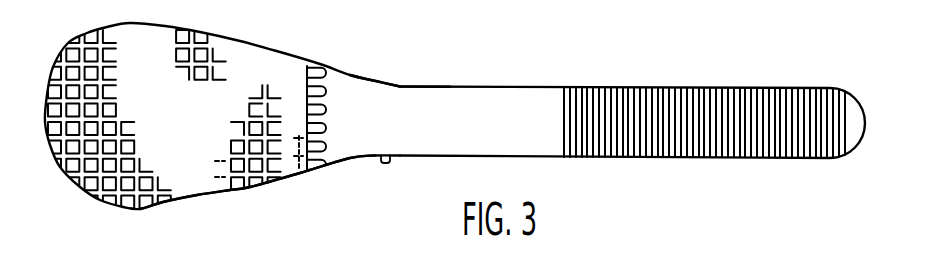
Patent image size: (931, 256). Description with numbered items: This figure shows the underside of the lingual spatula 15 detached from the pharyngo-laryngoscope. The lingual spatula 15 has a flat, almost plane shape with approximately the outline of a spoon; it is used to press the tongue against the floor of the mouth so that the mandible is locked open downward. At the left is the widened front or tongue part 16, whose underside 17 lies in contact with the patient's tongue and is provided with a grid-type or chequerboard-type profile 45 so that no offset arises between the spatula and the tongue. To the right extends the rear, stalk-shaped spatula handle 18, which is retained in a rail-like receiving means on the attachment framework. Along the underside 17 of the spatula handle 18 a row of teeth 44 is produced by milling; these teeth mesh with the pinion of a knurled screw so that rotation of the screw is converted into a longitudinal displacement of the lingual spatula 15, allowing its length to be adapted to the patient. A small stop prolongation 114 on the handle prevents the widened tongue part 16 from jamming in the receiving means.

The lingual spatula 15 is at (523, 80).
The tongue part 16 is at (288, 54).
The underside 17 is at (201, 188).
The spatula handle 18 is at (453, 84).
The row of teeth 44 is at (692, 100).
The grid-type or chequerboard-type profile 45 is at (80, 180).
The stop prolongation 114 is at (386, 164).